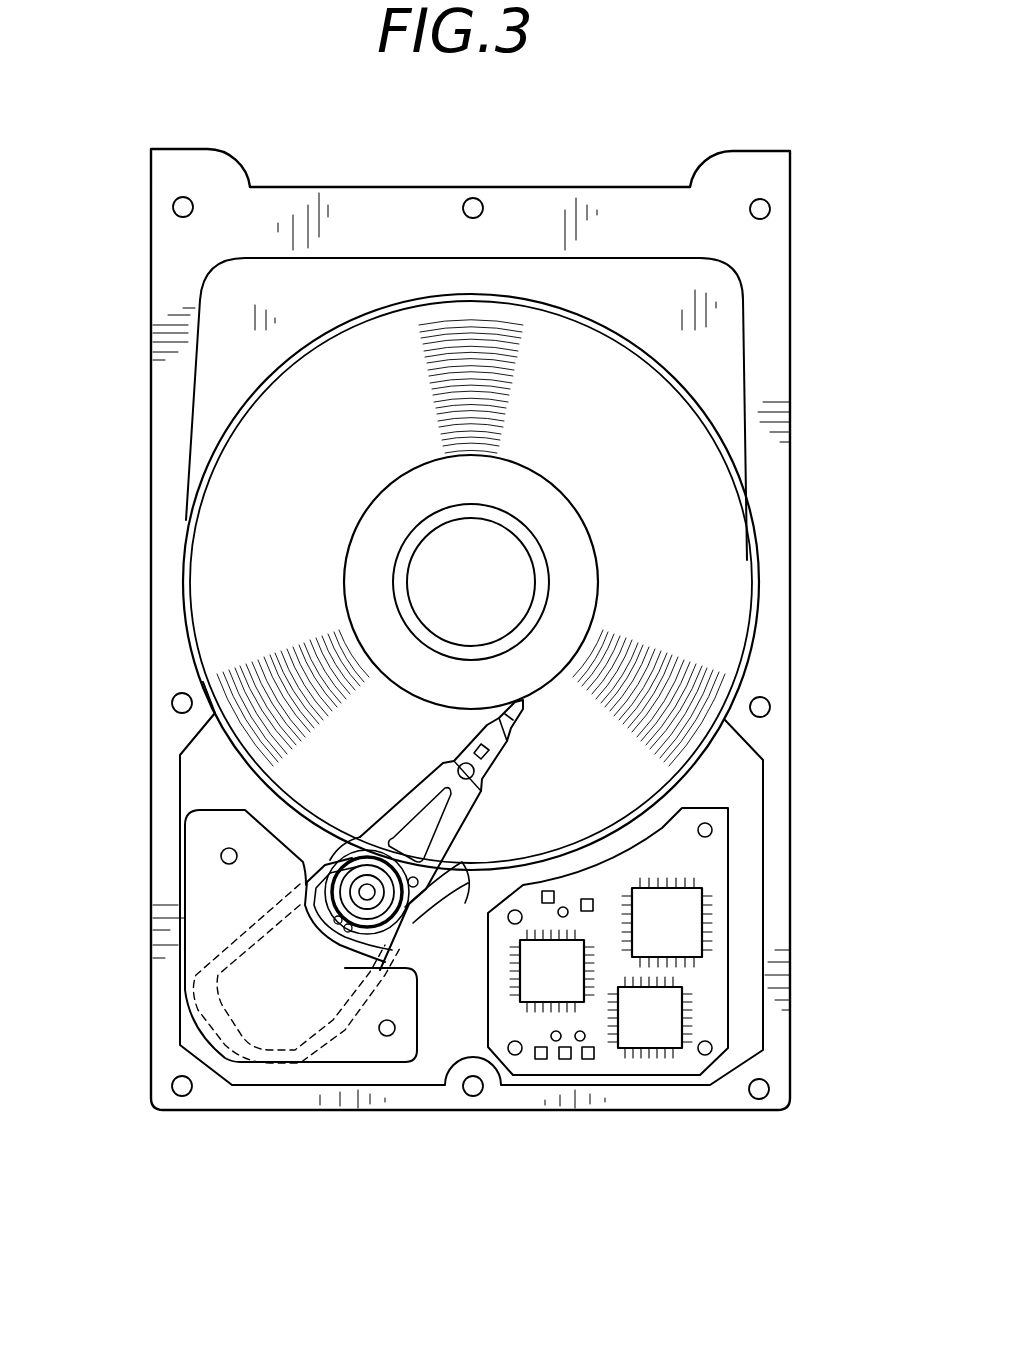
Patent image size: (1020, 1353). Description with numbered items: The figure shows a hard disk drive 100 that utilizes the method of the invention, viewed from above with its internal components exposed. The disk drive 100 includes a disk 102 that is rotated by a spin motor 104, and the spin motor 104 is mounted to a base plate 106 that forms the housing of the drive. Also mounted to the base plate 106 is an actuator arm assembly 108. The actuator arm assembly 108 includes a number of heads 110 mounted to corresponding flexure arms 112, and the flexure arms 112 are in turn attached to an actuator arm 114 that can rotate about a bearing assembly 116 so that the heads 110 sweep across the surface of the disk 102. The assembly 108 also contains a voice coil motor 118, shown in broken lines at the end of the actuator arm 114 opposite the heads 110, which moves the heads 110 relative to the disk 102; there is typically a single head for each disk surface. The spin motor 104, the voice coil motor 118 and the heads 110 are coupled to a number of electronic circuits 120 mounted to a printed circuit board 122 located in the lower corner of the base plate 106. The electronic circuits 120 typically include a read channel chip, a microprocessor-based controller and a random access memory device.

The hard disk drive 100 is at (776, 97).
The disk 102 is at (652, 447).
The spin motor 104 is at (575, 541).
The base plate 106 is at (230, 300).
The actuator arm assembly 108 is at (478, 806).
The heads 110 is at (527, 703).
The flexure arms 112 is at (488, 733).
The actuator arm 114 is at (421, 797).
The bearing assembly 116 is at (400, 900).
The voice coil motor 118 is at (305, 1013).
The electronic circuits 120 is at (687, 923).
The printed circuit board 122 is at (713, 852).